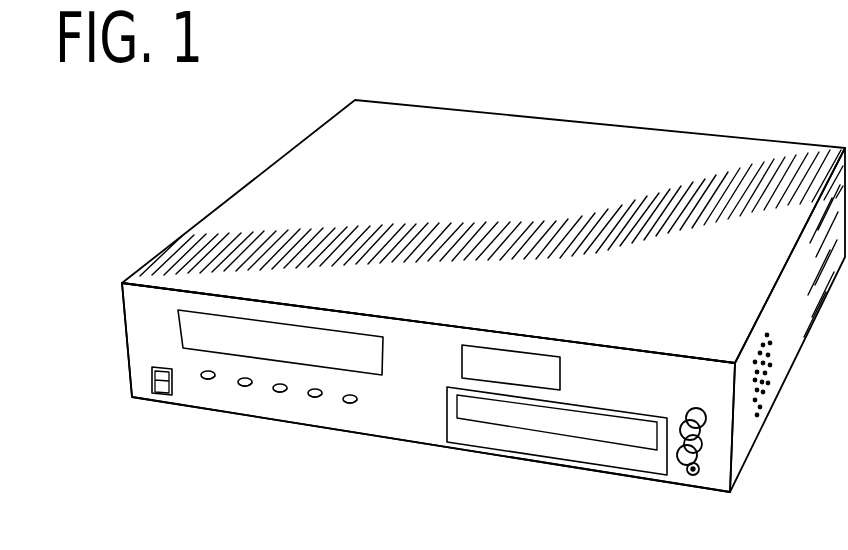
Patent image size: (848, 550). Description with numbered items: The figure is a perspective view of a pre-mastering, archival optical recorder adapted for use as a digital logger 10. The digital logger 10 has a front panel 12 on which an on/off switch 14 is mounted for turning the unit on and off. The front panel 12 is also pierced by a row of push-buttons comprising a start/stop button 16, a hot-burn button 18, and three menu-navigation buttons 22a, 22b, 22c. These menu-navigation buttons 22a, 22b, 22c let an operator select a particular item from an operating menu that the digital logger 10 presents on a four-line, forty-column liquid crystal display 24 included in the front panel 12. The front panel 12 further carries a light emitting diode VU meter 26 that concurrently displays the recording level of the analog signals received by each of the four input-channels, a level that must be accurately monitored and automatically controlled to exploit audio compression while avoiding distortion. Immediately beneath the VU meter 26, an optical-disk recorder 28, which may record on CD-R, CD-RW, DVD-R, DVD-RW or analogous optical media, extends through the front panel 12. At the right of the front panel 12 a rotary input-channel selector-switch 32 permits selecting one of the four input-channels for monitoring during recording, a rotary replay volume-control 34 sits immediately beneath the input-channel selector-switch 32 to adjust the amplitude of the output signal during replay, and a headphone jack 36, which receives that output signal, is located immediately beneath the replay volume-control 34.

The digital logger 10 is at (317, 80).
The front panel 12 is at (634, 389).
The on/off switch 14 is at (157, 391).
The start/stop button 16 is at (205, 380).
The hot-burn button 18 is at (242, 387).
The menu-navigation button 22a is at (277, 393).
The menu-navigation button 22b is at (313, 398).
The menu-navigation button 22c is at (348, 404).
The liquid crystal display 24 is at (327, 348).
The LED VU meter 26 is at (508, 368).
The optical-disk recorder 28 is at (506, 437).
The rotary input-channel selector-switch 32 is at (690, 422).
The rotary replay volume-control 34 is at (702, 443).
The headphone jack 36 is at (693, 476).